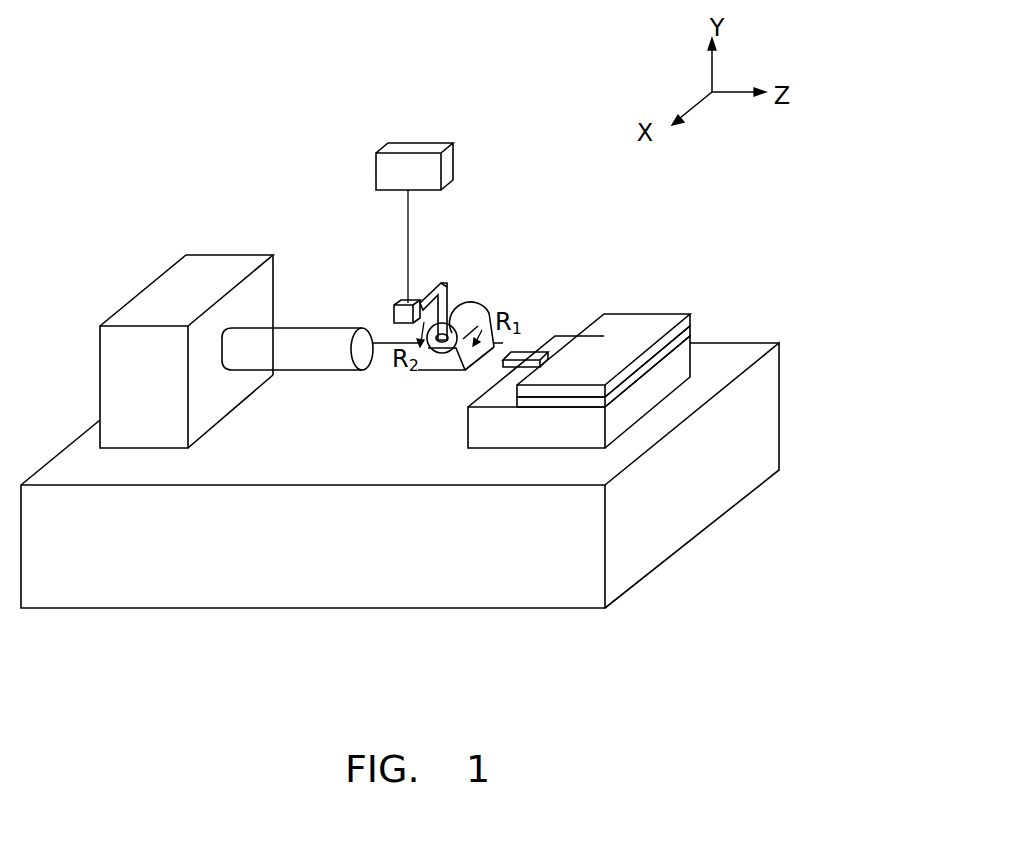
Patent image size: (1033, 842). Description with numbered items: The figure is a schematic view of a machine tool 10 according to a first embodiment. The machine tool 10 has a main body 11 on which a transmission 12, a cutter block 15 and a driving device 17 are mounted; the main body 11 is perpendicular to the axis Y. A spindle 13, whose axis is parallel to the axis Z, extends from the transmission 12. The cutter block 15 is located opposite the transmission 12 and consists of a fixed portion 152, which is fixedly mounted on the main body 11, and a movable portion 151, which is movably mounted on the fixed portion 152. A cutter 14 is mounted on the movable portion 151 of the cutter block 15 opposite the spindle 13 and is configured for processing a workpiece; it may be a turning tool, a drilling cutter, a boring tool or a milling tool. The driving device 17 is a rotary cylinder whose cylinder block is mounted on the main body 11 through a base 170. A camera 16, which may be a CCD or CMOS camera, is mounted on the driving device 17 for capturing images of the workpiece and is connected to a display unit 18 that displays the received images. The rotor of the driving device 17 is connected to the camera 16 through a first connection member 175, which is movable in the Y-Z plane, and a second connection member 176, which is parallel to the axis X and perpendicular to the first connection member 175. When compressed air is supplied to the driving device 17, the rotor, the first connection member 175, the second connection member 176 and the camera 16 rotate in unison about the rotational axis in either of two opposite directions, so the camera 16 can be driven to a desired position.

The machine tool 10 is at (181, 155).
The main body 11 is at (722, 458).
The transmission 12 is at (184, 277).
The spindle 13 is at (318, 340).
The cutter 14 is at (528, 357).
The cutter block 15 is at (637, 353).
The movable portion 151 is at (665, 320).
The fixed portion 152 is at (690, 352).
The camera 16 is at (400, 302).
The driving device 17 is at (478, 304).
The base 170 is at (440, 372).
The first connection member 175 is at (448, 300).
The second connection member 176 is at (432, 287).
The display unit 18 is at (412, 150).